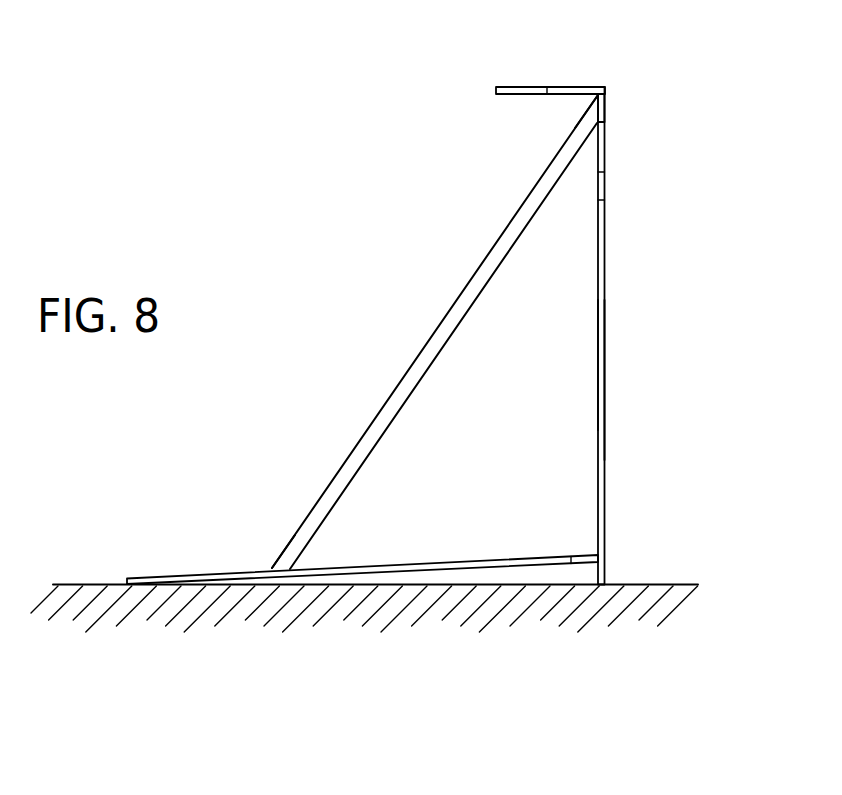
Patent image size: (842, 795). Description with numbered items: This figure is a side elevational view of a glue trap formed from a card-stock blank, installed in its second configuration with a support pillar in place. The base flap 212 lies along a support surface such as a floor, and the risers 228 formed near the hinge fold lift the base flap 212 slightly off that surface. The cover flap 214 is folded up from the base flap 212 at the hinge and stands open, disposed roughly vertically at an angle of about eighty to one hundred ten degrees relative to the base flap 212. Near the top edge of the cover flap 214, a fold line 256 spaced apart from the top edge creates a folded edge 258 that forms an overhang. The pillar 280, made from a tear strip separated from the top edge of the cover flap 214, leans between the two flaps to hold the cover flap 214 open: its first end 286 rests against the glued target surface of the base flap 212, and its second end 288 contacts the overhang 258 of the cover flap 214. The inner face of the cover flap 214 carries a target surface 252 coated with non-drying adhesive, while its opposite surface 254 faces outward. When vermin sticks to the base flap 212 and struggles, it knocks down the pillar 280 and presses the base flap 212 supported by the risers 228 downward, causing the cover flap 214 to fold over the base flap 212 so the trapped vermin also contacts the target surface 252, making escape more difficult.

The base flap 212 is at (143, 585).
The riser 228 is at (605, 571).
The cover flap 214 is at (605, 248).
The target surface 252 is at (598, 365).
The opposite surface 254 is at (605, 398).
The folded edge 258 is at (570, 87).
The fold line 256 is at (605, 87).
The pillar 280 is at (422, 350).
The second end 288 is at (583, 105).
The first end 286 is at (272, 568).